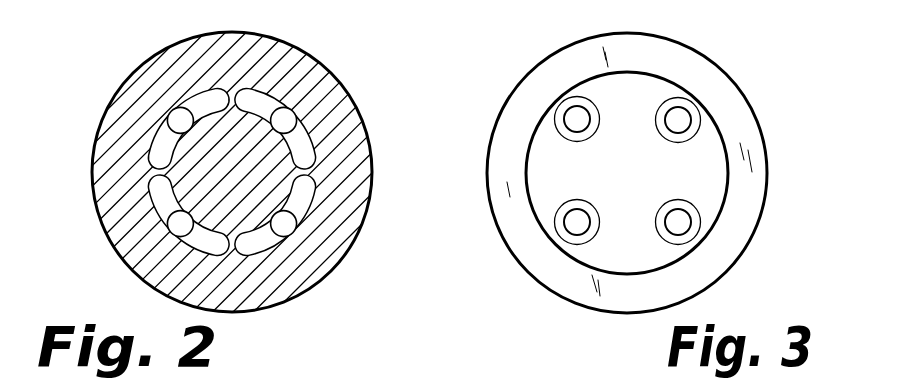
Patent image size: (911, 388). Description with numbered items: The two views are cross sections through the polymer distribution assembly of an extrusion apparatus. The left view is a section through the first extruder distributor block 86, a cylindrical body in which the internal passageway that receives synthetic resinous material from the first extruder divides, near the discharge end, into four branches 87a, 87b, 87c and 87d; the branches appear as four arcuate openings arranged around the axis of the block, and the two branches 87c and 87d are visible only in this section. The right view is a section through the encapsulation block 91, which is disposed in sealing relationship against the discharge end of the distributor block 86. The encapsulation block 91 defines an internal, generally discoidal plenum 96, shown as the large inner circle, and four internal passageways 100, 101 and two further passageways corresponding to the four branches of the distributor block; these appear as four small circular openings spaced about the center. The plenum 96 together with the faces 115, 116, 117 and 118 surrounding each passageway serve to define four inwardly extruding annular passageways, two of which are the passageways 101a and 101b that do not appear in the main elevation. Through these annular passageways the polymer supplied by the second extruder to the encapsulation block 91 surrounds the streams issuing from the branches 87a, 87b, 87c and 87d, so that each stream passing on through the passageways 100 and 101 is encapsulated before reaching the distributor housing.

In FIG. 2, the first extruder distributor block 86 is at (177, 70).
In FIG. 2, the branch passageway 87a is at (162, 133).
In FIG. 2, the branch passageway 87b is at (162, 198).
In FIG. 2, the branch passageway 87c is at (262, 238).
In FIG. 2, the branch passageway 87d is at (298, 137).
In FIG. 3, the encapsulation block 91 is at (685, 62).
In FIG. 3, the plenum 96 is at (547, 143).
In FIG. 3, the internal passageway 100 is at (578, 116).
In FIG. 3, the internal passageway 101 is at (578, 222).
In FIG. 3, the inwardly extruding annular passageway 101a is at (683, 124).
In FIG. 3, the inwardly extruding annular passageway 101b is at (685, 222).
In FIG. 3, the face 115 is at (552, 108).
In FIG. 3, the face 116 is at (570, 240).
In FIG. 3, the face 117 is at (697, 228).
In FIG. 3, the face 118 is at (695, 121).